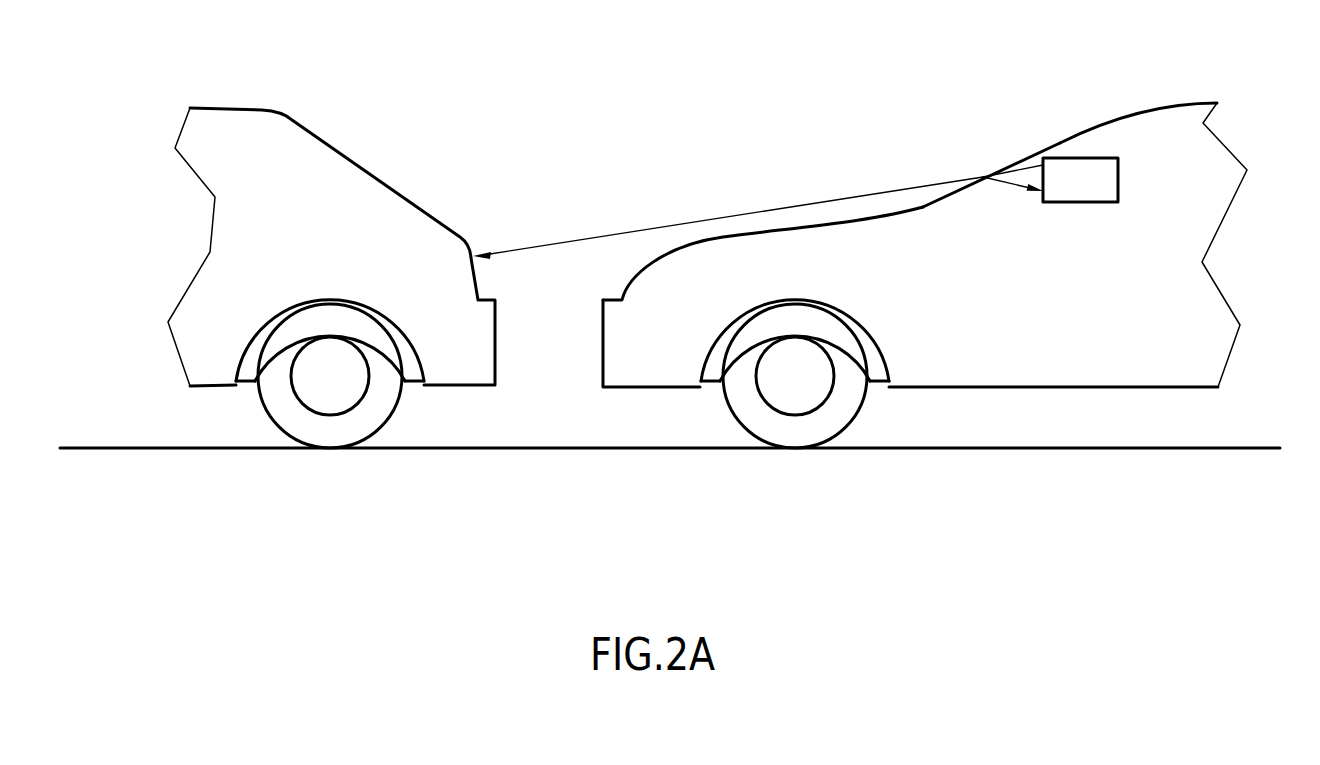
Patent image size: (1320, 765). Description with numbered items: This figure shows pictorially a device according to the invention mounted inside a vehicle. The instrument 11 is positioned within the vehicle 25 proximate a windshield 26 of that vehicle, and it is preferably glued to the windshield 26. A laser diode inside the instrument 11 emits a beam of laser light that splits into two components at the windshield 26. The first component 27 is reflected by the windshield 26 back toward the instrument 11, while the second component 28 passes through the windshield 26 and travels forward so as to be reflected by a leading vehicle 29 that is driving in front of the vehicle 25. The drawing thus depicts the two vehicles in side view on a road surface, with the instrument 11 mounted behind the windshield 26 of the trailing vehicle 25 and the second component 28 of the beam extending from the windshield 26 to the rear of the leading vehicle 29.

The instrument 11 is at (1073, 202).
The vehicle 25 is at (1205, 345).
The windshield 26 is at (1048, 148).
The first component 27 is at (996, 180).
The second component 28 is at (792, 205).
The leading vehicle 29 is at (475, 343).